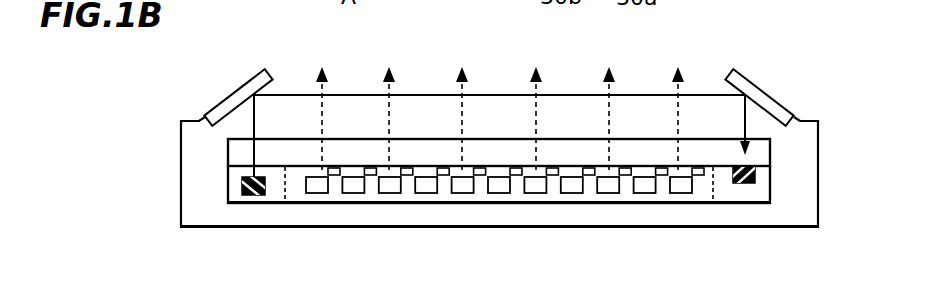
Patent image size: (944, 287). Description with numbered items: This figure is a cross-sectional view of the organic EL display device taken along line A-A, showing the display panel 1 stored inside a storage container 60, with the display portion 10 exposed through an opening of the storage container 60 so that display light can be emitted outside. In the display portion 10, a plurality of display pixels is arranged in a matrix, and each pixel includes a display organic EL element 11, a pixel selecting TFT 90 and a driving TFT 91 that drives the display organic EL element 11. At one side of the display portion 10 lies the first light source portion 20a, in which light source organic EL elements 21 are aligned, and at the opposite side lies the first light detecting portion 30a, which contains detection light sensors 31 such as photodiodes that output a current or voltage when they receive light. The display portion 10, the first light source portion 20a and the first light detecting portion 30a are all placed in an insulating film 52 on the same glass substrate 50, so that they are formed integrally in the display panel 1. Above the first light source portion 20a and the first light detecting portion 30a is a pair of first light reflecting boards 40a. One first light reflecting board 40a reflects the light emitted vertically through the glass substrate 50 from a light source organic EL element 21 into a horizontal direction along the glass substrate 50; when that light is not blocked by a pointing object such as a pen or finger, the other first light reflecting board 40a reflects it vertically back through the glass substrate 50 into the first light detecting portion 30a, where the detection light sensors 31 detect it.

The display panel 1 is at (665, 212).
The display portion 10 is at (560, 204).
The display organic EL element 11 is at (428, 190).
The first light source portion 20a is at (235, 229).
The light source organic EL element 21 is at (260, 192).
The first light detecting portion 30a is at (770, 222).
The detection light sensor 31 is at (748, 183).
The first light reflecting board 40a is at (247, 90).
The glass substrate 50 is at (756, 150).
The insulating film 52 is at (762, 188).
The storage container 60 is at (810, 121).
The pixel selecting TFT 90 is at (516, 226).
The driving TFT 91 is at (480, 176).